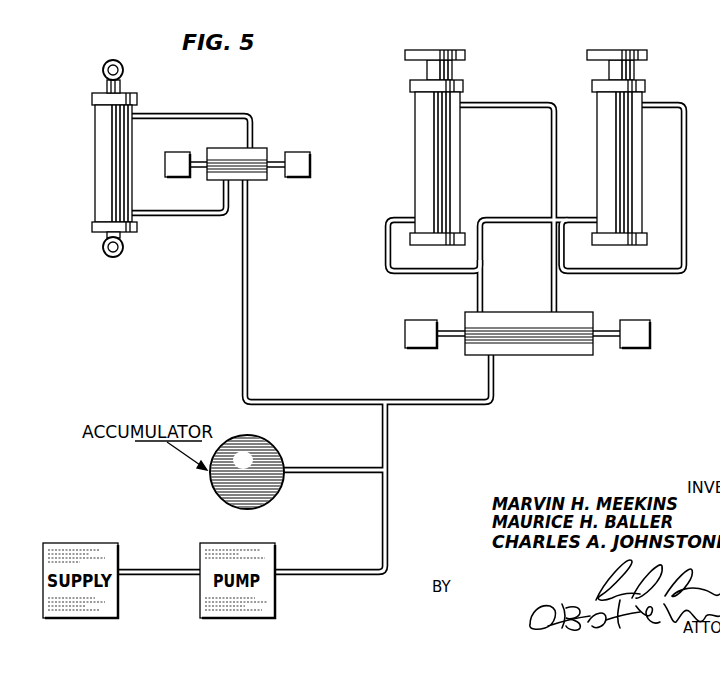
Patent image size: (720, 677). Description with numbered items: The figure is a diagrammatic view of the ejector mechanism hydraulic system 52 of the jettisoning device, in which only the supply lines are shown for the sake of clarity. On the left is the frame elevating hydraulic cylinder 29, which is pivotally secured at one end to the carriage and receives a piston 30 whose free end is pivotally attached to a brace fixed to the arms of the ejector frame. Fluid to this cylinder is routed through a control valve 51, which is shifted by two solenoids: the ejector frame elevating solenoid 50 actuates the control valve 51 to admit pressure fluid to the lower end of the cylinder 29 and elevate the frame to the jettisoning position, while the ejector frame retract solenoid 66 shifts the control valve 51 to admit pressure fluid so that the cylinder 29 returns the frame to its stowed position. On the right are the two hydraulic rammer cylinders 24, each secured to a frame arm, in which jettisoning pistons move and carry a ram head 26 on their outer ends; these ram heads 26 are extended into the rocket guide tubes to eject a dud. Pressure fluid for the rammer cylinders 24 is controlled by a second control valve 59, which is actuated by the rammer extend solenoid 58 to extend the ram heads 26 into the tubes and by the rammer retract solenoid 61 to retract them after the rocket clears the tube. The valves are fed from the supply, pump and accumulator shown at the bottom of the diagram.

The hydraulic rammer cylinder 24 is at (427, 127).
The ram head 26 is at (420, 53).
The frame elevating hydraulic cylinder 29 is at (100, 146).
The piston 30 is at (107, 83).
The ejector frame elevating solenoid 50 is at (177, 152).
The control valve 51 is at (260, 155).
The ejector mechanism hydraulic system 52 is at (222, 253).
The rammer extend solenoid 58 is at (407, 322).
The control valve 59 is at (540, 350).
The rammer retract solenoid 61 is at (650, 320).
The ejector frame retract solenoid 66 is at (305, 177).